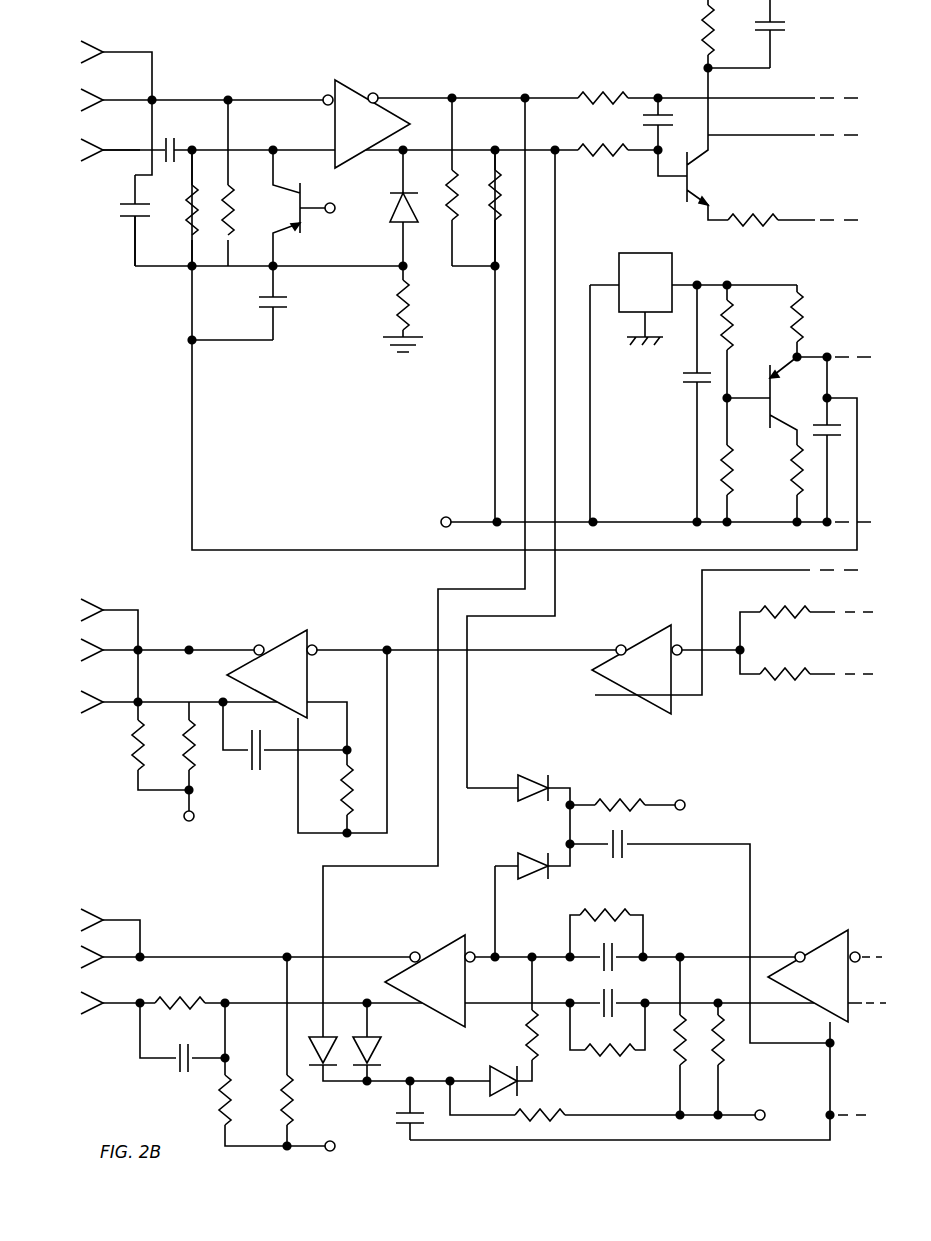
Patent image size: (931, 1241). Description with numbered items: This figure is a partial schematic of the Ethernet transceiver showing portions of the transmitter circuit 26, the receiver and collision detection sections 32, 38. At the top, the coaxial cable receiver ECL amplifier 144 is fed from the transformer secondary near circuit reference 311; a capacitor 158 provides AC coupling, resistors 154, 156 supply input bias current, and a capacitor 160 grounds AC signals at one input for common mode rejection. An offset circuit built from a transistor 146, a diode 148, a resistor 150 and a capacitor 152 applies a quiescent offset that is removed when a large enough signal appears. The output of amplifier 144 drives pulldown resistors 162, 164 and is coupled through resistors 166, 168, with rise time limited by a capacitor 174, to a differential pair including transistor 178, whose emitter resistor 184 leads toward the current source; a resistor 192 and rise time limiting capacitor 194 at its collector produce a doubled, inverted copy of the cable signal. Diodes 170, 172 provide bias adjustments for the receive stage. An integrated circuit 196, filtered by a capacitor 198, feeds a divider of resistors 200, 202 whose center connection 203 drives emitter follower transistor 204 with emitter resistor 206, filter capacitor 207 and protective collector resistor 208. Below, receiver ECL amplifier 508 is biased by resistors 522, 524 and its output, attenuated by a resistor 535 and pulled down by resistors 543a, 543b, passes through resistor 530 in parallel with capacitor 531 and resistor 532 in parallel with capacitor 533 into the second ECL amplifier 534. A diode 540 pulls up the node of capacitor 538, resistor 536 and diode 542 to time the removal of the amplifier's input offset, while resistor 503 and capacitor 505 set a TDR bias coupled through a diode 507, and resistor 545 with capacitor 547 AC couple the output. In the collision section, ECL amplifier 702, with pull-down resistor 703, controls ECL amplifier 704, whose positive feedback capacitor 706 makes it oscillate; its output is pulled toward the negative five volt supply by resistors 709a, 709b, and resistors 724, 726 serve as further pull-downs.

The transmitter current source, switch, shunt, and reference circuit 26 is at (455, 36).
The circuit reference 311 is at (118, 155).
The ECL amplifier 144 is at (358, 90).
The transistor 146 is at (282, 230).
The diode 148 is at (392, 218).
The resistor 150 is at (420, 309).
The capacitor 152 is at (282, 298).
The resistor 154 is at (182, 215).
The resistor 156 is at (232, 248).
The capacitor 158 is at (176, 143).
The capacitor 160 is at (125, 218).
The pulldown resistor 162 is at (448, 190).
The pulldown resistor 164 is at (493, 170).
The resistor 166 is at (605, 90).
The resistor 168 is at (608, 154).
The diode 170 is at (518, 795).
The diode 172 is at (318, 1070).
The capacitor 174 is at (640, 118).
The transistor 178 is at (693, 170).
The resistor 184 is at (752, 222).
The resistor 192 is at (700, 42).
The rise time limiting capacitor 194 is at (775, 33).
The integrated circuit 196 is at (640, 252).
The capacitor 198 is at (685, 374).
The resistor 200 is at (735, 336).
The resistor 202 is at (731, 470).
The circuit connection 203 is at (722, 400).
The transistor 204 is at (762, 375).
The resistor 206 is at (800, 335).
The capacitor 207 is at (823, 422).
The resistor 208 is at (792, 472).
The circuit section 32 is at (637, 735).
The circuit section 38 is at (788, 842).
The ECL amplifier 702 is at (648, 635).
The ECL amplifier 704 is at (290, 635).
The capacitor 706 is at (268, 740).
The resistor 703 is at (358, 795).
The pull-down resistor 709a is at (132, 760).
The pull-down resistor 709b is at (195, 765).
The resistor 724 is at (770, 612).
The resistor 726 is at (780, 676).
The resistor 503 is at (598, 805).
The capacitor 505 is at (626, 850).
The diode 507 is at (520, 858).
The ECL amplifier 508 is at (818, 940).
The resistor 522 is at (722, 1058).
The resistor 524 is at (674, 1058).
The resistor 530 is at (612, 905).
The capacitor 531 is at (615, 948).
The resistor 532 is at (620, 1058).
The capacitor 533 is at (600, 1000).
The second ECL amplifier 534 is at (440, 948).
The resistor 535 is at (528, 1045).
The resistor 536 is at (542, 1112).
The capacitor 538 is at (400, 1108).
The diode 540 is at (378, 1055).
The diode 542 is at (488, 1078).
The resistor 543a is at (218, 1088).
The resistor 543b is at (292, 1100).
The resistor 545 is at (195, 1005).
The capacitor 547 is at (170, 1065).